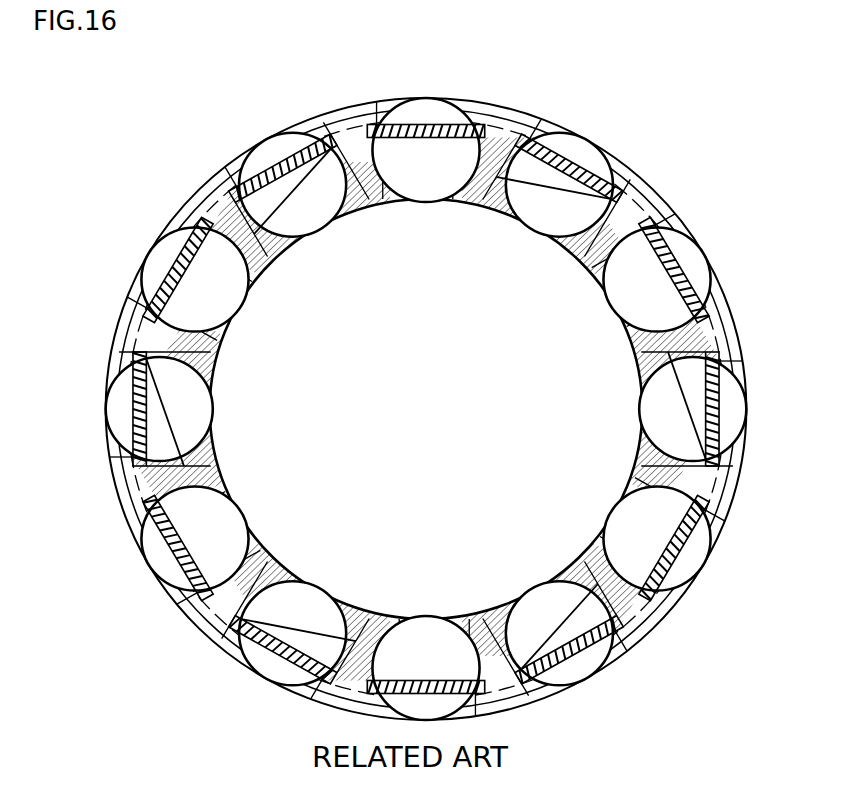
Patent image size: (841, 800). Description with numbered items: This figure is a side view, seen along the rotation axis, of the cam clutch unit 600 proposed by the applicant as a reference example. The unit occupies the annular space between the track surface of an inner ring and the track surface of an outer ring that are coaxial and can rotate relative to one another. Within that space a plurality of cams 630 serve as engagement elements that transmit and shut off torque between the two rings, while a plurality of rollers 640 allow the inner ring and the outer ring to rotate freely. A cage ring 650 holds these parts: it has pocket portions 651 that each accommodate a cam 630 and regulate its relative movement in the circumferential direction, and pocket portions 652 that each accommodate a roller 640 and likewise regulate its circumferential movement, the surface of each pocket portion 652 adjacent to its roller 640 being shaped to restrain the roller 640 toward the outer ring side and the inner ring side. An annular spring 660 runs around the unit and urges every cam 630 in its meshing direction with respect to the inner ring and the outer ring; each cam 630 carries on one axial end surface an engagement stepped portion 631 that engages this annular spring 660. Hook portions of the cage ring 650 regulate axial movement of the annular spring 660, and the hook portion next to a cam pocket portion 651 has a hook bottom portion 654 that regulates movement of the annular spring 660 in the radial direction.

The cam clutch unit 600 is at (156, 118).
The cam 630 is at (277, 150).
The engagement stepped portion 631 is at (288, 190).
The roller 640 is at (405, 112).
The cage ring 650 is at (180, 205).
The pocket portion 651 is at (216, 160).
The pocket portion 652 is at (453, 97).
The hook bottom portion 654 is at (722, 343).
The annular spring 660 is at (698, 266).